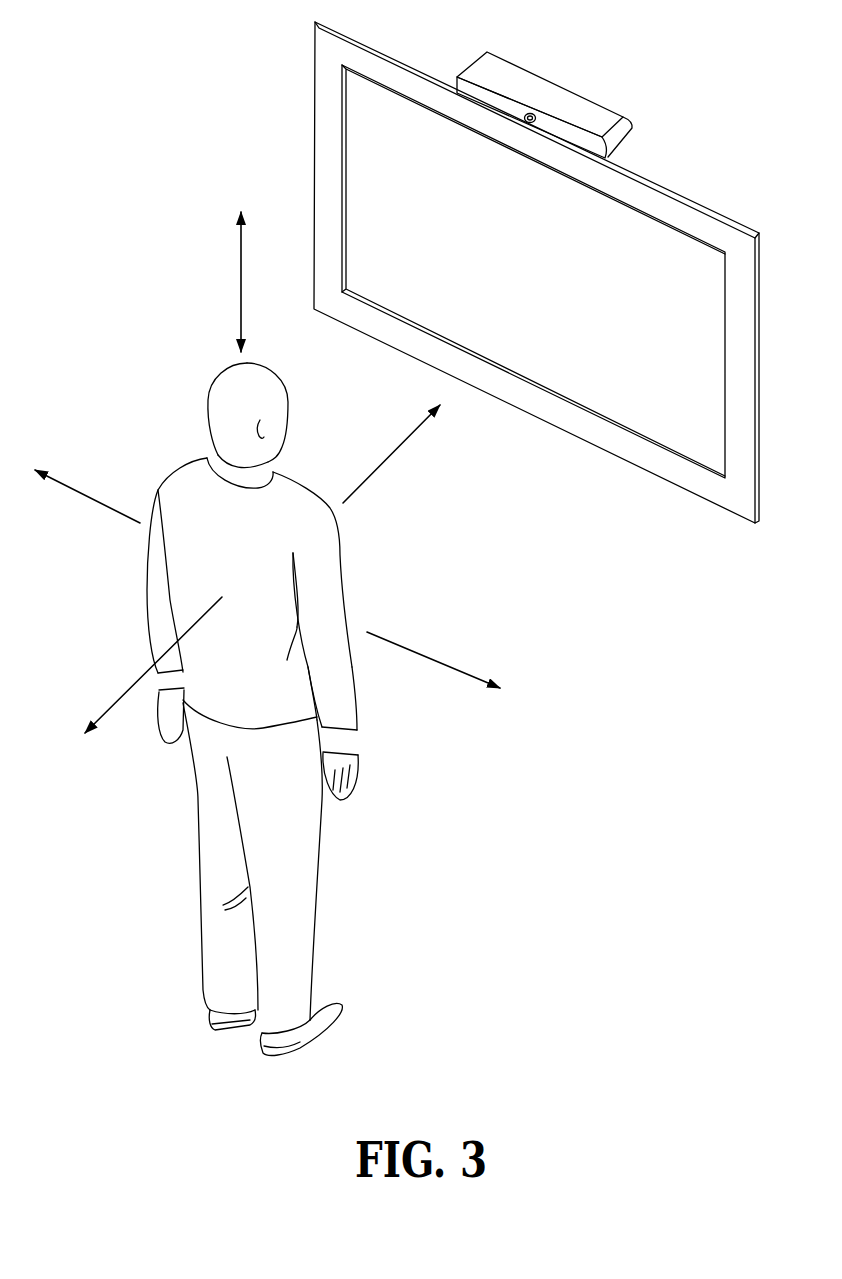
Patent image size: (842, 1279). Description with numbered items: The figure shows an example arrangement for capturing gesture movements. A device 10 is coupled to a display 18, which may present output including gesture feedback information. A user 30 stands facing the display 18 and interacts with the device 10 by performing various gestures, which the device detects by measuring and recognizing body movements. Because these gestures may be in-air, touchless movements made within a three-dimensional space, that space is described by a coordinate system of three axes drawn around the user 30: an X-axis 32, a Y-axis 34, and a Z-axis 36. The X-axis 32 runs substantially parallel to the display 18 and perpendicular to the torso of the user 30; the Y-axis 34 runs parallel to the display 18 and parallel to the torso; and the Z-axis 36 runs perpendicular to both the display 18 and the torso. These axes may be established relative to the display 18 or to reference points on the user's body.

The device 10 is at (633, 127).
The display 18 is at (711, 203).
The user 30 is at (177, 450).
The X-axis 32 is at (305, 595).
The Y-axis 34 is at (240, 593).
The Z-axis 36 is at (254, 254).